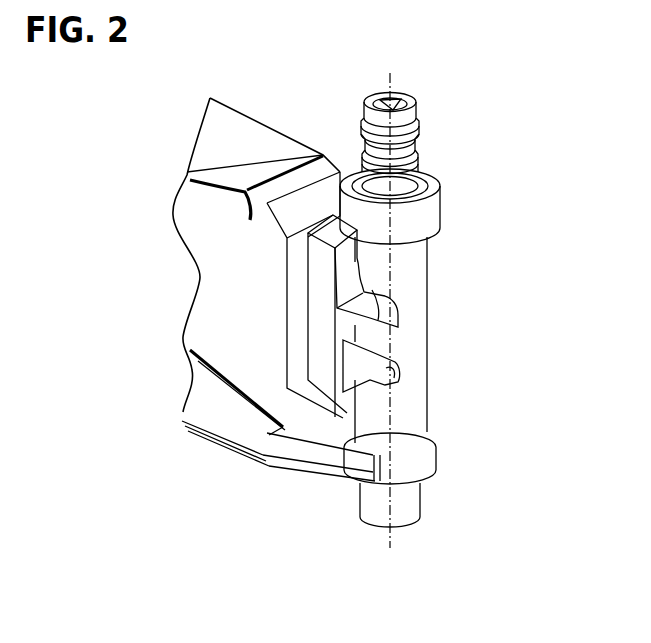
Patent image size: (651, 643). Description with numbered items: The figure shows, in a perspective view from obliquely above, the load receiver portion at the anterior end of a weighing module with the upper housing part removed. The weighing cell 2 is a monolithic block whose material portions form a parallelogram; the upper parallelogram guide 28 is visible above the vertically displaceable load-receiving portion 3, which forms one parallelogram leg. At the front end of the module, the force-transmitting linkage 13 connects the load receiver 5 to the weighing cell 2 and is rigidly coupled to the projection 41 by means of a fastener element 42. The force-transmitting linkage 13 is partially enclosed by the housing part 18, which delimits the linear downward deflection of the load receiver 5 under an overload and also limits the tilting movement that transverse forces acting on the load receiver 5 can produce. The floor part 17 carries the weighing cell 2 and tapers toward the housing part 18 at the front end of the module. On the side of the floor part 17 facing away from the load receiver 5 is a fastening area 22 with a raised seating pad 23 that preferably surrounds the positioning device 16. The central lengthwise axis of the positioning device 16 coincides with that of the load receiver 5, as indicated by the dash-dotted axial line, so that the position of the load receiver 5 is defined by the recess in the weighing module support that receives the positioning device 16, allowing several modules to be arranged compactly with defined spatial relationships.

The weighing cell 2 is at (175, 293).
The upper parallelogram guide 28 is at (238, 156).
The load-receiving portion 3 is at (328, 362).
The force-transmitting linkage 13 is at (382, 308).
The projection 41 is at (387, 345).
The fastener element 42 is at (388, 373).
The housing part 18 is at (398, 273).
The load receiver 5 is at (425, 138).
The seating pad 23 is at (413, 503).
The positioning device 16 is at (395, 507).
The fastening area 22 is at (398, 527).
The floor part 17 is at (217, 404).